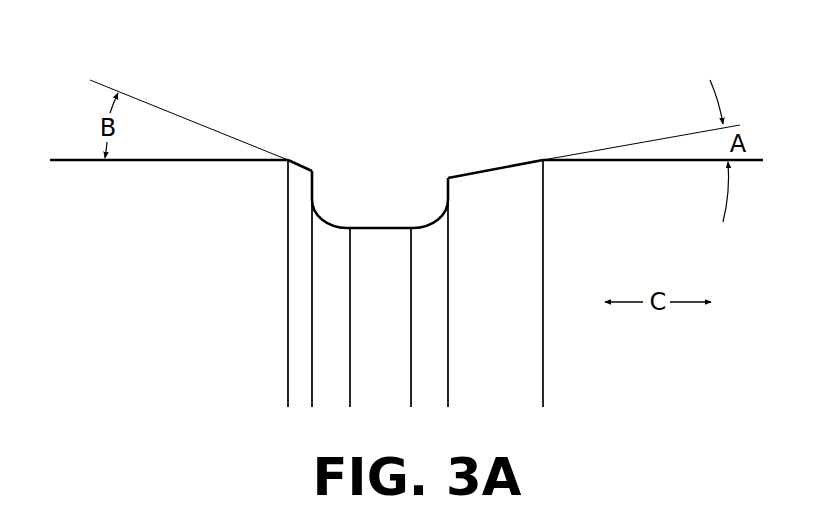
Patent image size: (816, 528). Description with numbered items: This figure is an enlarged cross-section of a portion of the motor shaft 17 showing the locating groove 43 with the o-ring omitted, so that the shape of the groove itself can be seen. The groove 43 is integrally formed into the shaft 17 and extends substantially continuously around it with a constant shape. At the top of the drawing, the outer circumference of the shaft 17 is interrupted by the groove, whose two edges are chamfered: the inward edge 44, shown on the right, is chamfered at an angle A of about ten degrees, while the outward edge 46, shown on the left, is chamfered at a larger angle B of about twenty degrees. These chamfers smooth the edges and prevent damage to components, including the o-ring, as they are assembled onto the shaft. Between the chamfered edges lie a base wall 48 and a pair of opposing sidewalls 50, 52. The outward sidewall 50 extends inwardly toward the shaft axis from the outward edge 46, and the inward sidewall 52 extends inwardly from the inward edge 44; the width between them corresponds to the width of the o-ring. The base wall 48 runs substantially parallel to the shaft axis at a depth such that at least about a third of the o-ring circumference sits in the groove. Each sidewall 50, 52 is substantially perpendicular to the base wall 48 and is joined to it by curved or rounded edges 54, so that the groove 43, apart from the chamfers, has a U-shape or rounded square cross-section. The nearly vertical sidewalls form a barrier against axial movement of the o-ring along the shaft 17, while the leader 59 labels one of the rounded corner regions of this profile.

The shaft 17 is at (207, 299).
The locating groove 43 is at (427, 112).
The inward edge 44 is at (493, 168).
The outward edge 46 is at (303, 162).
The base wall 48 is at (372, 228).
The outward sidewall 50 is at (317, 173).
The inward sidewall 52 is at (447, 178).
The curved or rounded edges 54 is at (433, 215).
The first curved corner surface 59 is at (323, 212).